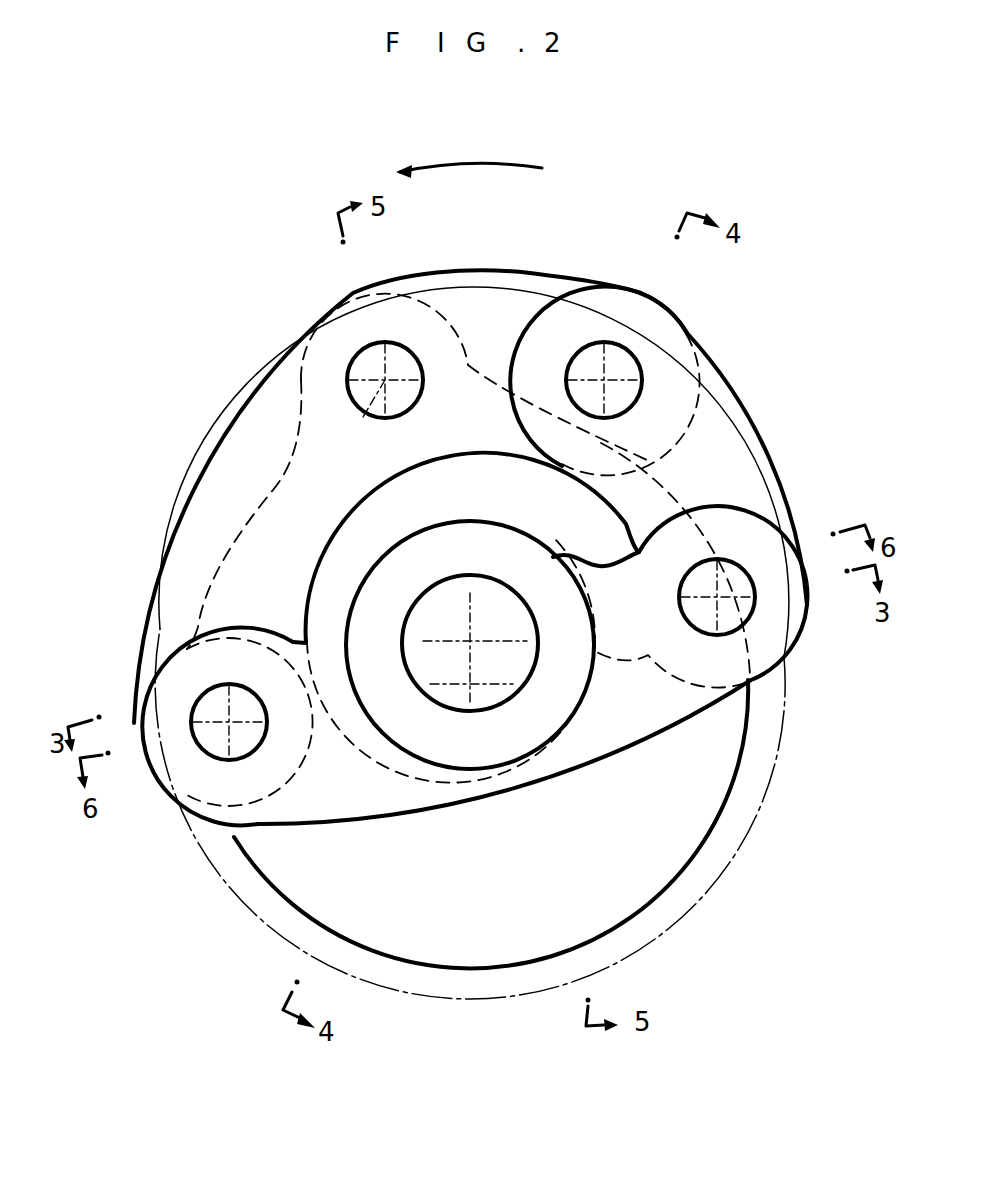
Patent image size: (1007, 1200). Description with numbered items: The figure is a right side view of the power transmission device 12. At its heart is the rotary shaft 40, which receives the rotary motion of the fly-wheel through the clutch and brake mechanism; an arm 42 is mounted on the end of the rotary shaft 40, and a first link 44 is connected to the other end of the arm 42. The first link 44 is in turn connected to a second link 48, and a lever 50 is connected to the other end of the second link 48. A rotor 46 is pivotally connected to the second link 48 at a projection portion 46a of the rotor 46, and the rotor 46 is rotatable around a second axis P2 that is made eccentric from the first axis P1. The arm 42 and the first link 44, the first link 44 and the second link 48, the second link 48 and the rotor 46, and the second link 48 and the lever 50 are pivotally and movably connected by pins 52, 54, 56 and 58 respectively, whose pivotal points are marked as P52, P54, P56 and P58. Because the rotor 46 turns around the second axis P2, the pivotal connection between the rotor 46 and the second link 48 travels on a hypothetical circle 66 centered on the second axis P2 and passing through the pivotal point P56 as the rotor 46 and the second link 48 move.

The power transmission device 12 is at (720, 298).
The rotary shaft 40 is at (423, 675).
The arm 42 is at (643, 723).
The first link 44 is at (740, 440).
The rotor 46 is at (735, 762).
The projection portion 46a is at (351, 309).
The second link 48 is at (288, 432).
The lever 50 is at (425, 783).
The pin 52 is at (747, 587).
The pin 54 is at (624, 362).
The pin 56 is at (401, 350).
The pin 58 is at (217, 747).
The hypothetical circle 66 is at (743, 840).
The first axis P1 is at (470, 641).
The second axis P2 is at (473, 683).
The pivotal point P52 is at (712, 605).
The pivotal point P54 is at (605, 380).
The pivotal point P56 is at (377, 392).
The pivotal point P58 is at (232, 719).